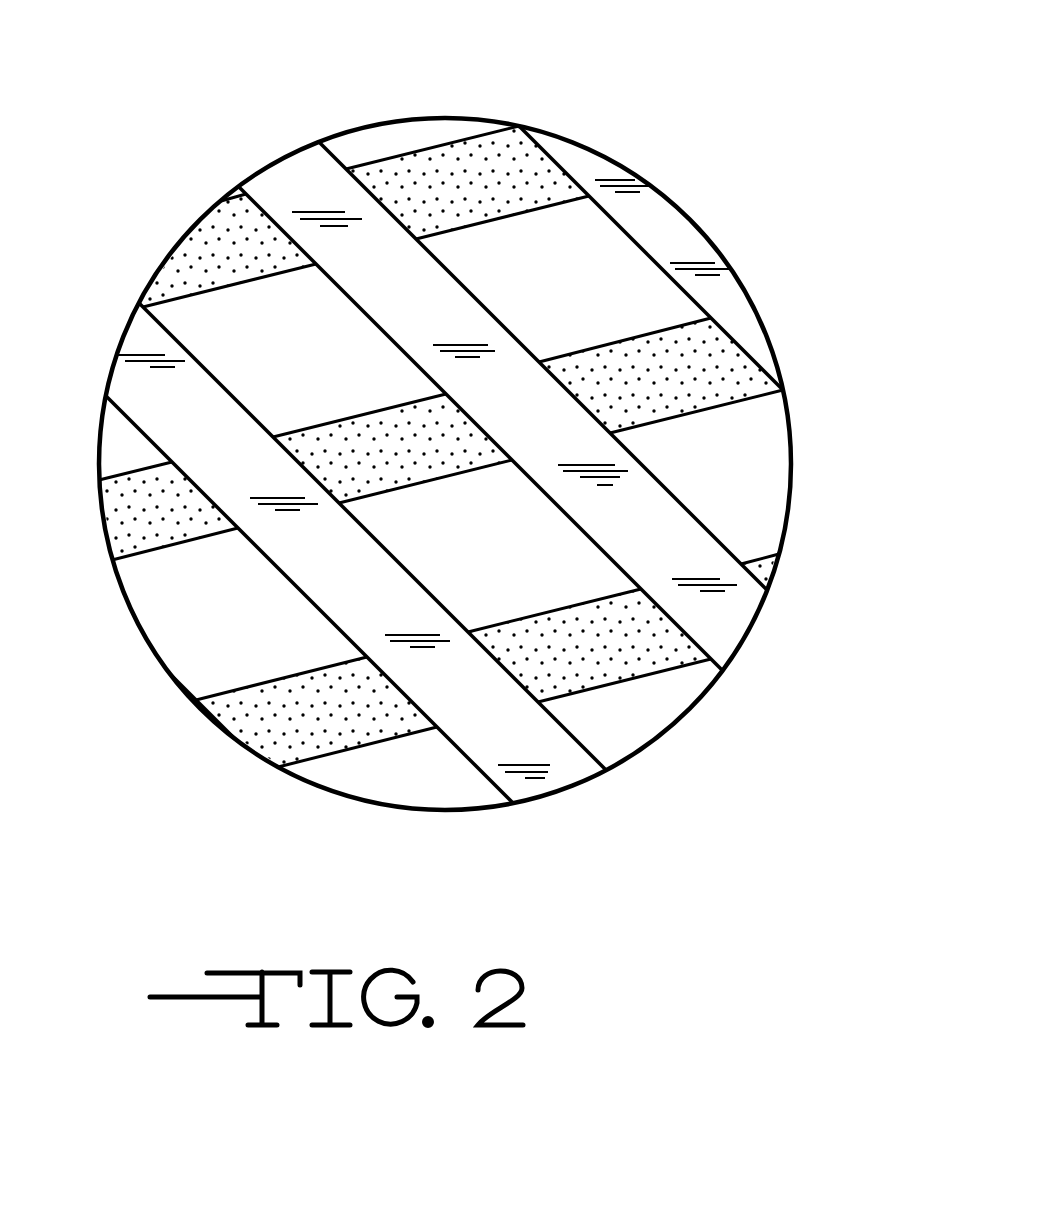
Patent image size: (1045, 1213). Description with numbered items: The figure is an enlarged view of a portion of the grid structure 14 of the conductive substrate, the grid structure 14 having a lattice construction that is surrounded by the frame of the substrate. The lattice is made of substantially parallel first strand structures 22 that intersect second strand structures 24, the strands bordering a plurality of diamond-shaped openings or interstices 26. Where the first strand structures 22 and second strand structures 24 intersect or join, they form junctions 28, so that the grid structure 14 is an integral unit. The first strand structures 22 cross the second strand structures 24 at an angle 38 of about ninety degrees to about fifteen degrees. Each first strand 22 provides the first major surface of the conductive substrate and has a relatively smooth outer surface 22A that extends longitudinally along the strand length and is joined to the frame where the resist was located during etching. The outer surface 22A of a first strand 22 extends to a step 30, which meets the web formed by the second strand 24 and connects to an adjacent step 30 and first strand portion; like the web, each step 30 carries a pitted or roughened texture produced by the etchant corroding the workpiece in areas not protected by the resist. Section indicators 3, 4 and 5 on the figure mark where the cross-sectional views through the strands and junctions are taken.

The grid structure 14 is at (823, 373).
The first strand structures 22 is at (280, 190).
The smooth outer surface 22A is at (595, 784).
The second strand structures 24 is at (483, 157).
The diamond-shaped openings or interstices 26 is at (533, 242).
The junctions 28 is at (378, 511).
The step 30 is at (247, 265).
The angle 38 is at (214, 322).
The section line 3- 3 is at (230, 470).
The section line 4- 4 is at (377, 625).
The section line 5- 5 is at (187, 442).